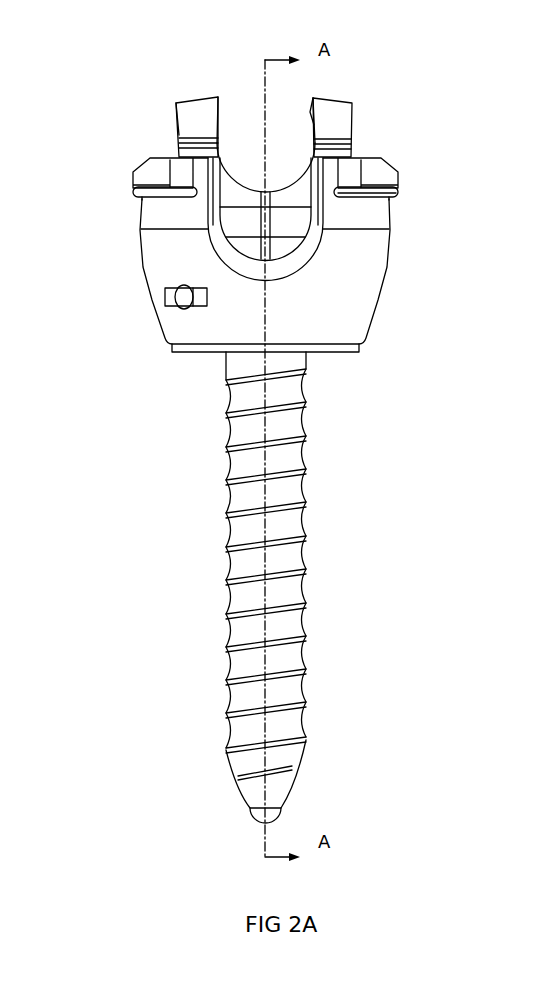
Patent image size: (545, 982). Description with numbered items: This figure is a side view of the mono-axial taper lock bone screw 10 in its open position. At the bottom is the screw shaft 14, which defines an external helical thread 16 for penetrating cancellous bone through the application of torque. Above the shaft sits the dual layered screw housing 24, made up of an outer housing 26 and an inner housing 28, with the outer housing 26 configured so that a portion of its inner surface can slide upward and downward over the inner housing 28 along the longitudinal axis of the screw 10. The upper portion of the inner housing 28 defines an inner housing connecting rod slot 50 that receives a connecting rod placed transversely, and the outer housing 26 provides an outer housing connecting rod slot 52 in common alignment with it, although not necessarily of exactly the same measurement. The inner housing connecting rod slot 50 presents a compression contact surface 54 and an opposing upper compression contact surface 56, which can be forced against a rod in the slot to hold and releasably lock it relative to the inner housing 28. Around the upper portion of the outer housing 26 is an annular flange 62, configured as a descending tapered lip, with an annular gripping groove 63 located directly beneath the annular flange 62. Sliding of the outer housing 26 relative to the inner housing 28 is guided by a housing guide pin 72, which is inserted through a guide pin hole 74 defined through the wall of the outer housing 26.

The mono-axial taper lock bone screw 10 is at (436, 312).
The screw shaft 14 is at (287, 492).
The external helical thread 16 is at (303, 568).
The dual layered screw housing 24 is at (394, 150).
The outer housing 26 is at (378, 267).
The inner housing 28 is at (340, 133).
The inner housing connecting rod slot 50 is at (310, 120).
The outer housing connecting rod slot 52 is at (392, 193).
The compression contact surface 54 is at (212, 130).
The upper compression contact surface 56 is at (219, 113).
The annular flange 62 is at (133, 188).
The annular gripping groove 63 is at (141, 200).
The housing guide pin 72 is at (190, 301).
The guide pin hole 74 is at (176, 295).